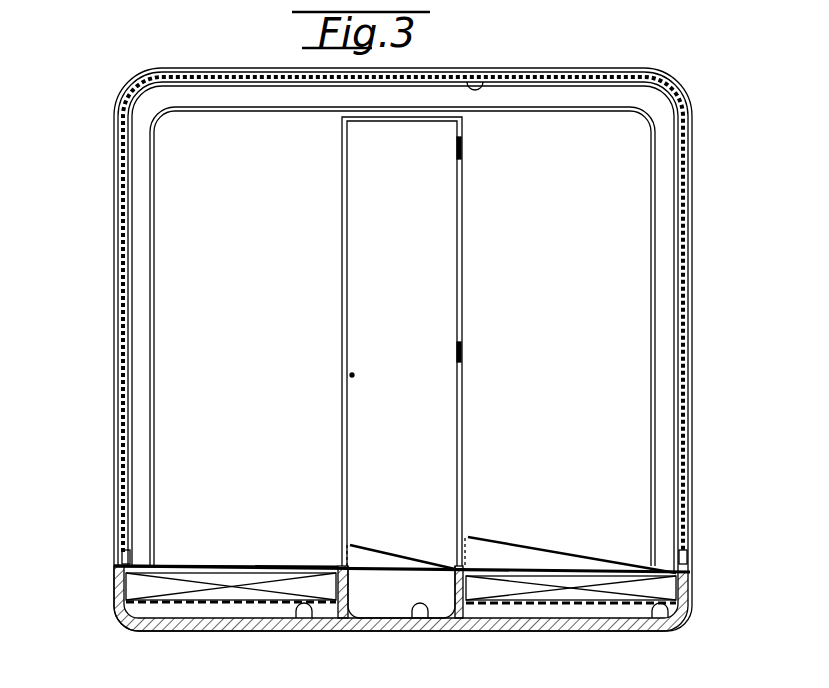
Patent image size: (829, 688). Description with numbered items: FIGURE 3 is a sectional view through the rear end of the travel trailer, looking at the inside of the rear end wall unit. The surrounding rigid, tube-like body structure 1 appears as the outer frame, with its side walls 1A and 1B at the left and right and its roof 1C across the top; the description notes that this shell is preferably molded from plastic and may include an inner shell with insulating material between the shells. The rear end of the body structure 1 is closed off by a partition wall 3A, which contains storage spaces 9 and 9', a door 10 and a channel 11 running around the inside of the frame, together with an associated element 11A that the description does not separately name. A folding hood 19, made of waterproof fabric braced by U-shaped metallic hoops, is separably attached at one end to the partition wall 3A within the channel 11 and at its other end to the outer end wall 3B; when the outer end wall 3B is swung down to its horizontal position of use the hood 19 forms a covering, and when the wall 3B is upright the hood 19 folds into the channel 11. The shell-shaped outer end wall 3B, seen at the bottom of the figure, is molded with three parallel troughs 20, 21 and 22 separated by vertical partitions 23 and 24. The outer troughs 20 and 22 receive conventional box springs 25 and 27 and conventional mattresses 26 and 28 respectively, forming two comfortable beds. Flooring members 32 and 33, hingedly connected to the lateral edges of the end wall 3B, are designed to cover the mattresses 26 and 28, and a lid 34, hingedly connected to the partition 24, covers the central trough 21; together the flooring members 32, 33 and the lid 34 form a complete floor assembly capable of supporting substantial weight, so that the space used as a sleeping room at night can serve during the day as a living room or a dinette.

The body structure 1 is at (689, 81).
The side wall 1A is at (115, 333).
The side wall 1B is at (693, 325).
The roof 1C is at (563, 70).
The partition wall 3A is at (668, 379).
The outer end wall 3B is at (118, 589).
The storage space 9 is at (143, 350).
The right glass panel 9' is at (672, 350).
The door 10 is at (402, 341).
The channel 11 is at (481, 86).
The inner panel frame 11A is at (653, 182).
The folding hood 19 is at (125, 437).
The trough 20 is at (298, 614).
The trough 21 is at (413, 618).
The trough 22 is at (650, 617).
The vertical partition 23 is at (348, 592).
The vertical partition 24 is at (455, 592).
The box spring 25 is at (236, 603).
The mattress 26 is at (175, 582).
The box spring 27 is at (547, 604).
The mattress 28 is at (597, 588).
The flooring member 32 is at (232, 565).
The flooring member 33 is at (557, 557).
The lid 34 is at (405, 560).